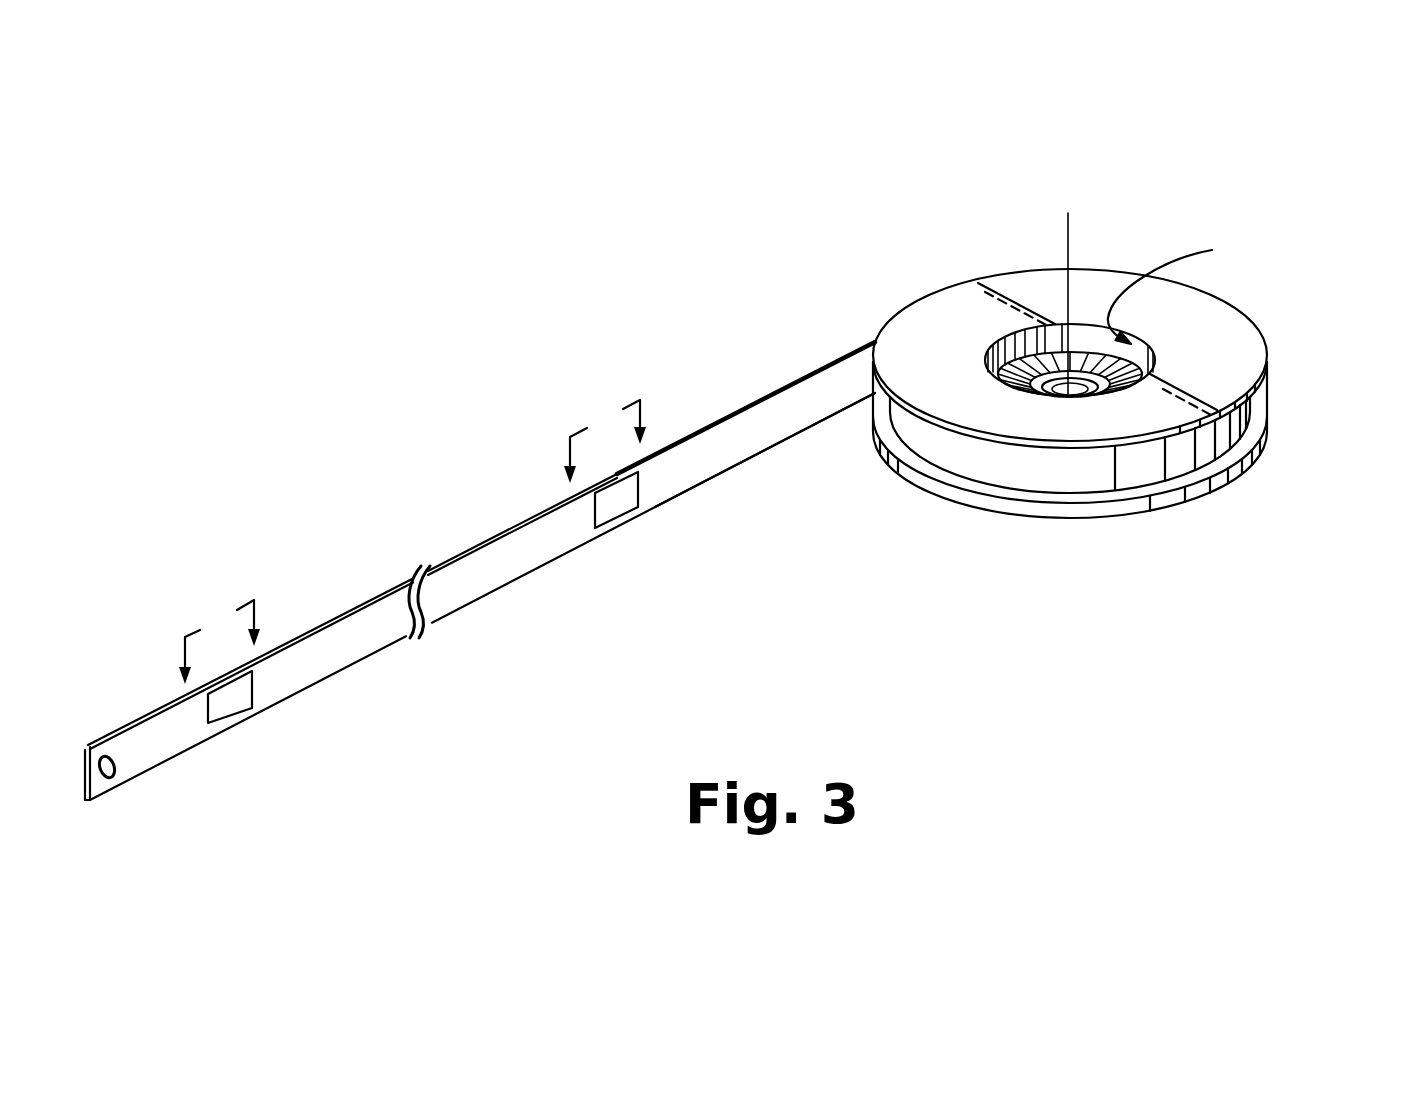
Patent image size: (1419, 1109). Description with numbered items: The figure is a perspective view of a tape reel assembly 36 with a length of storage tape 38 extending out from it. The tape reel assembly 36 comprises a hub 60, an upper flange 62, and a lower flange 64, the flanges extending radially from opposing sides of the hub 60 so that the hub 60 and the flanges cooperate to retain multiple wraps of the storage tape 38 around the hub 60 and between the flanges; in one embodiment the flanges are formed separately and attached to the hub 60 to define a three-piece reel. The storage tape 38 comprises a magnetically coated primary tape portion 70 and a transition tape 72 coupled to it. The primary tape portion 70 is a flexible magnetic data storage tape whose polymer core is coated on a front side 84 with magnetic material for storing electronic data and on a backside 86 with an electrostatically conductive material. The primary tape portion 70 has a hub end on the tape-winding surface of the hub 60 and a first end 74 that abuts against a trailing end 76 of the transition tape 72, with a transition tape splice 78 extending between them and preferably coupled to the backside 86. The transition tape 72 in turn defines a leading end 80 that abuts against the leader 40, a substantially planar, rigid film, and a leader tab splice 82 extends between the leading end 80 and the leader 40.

The tape reel assembly 36 is at (1146, 365).
The storage tape 38 is at (396, 460).
The leader 40 is at (96, 788).
The hub 60 is at (1178, 291).
The upper flange 62 is at (1243, 345).
The lower flange 64 is at (1257, 422).
The primary tape portion 70 is at (700, 436).
The transition tape 72 is at (467, 577).
The first end 74 is at (623, 520).
The trailing end 76 is at (613, 518).
The transition tape splice 78 is at (603, 503).
The leading end 80 is at (228, 728).
The leader tab splice 82 is at (247, 690).
The front side 84 is at (778, 412).
The backside 86 is at (750, 442).